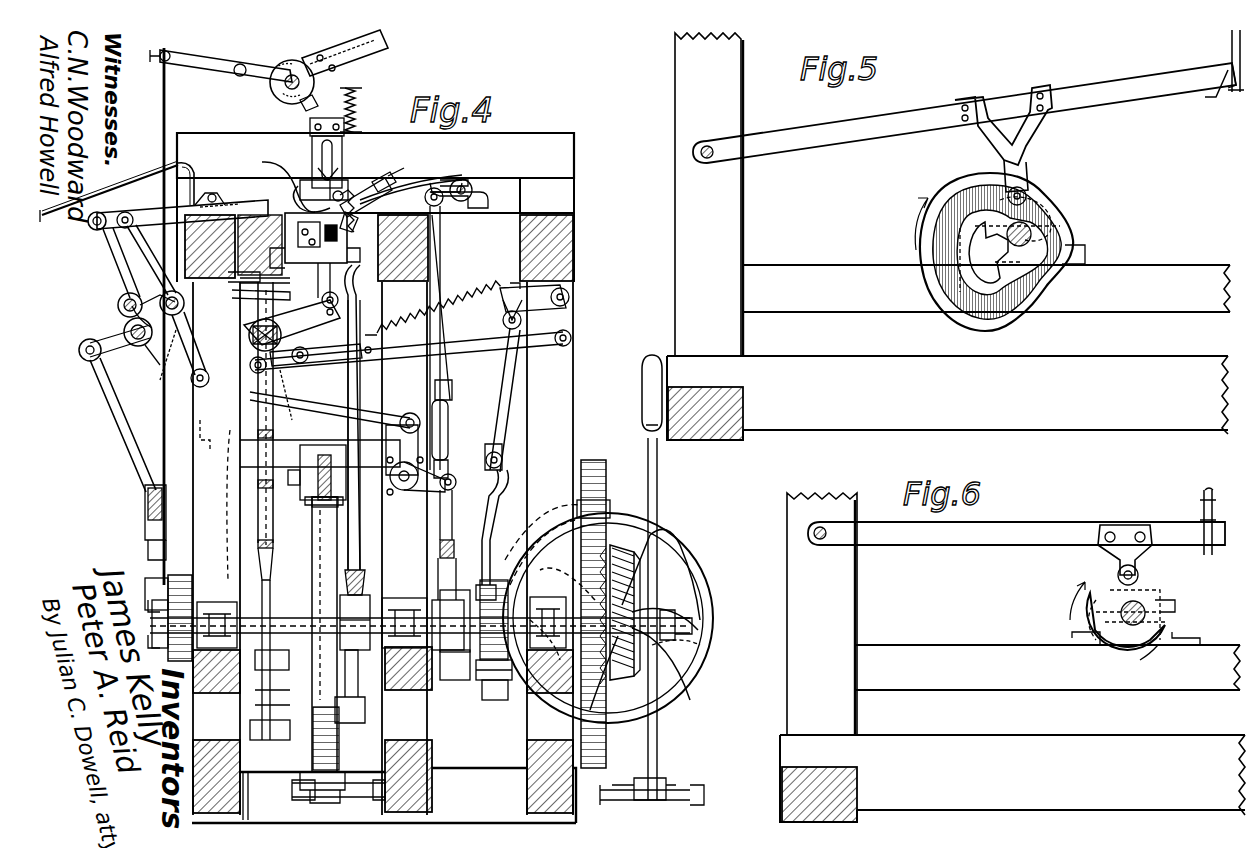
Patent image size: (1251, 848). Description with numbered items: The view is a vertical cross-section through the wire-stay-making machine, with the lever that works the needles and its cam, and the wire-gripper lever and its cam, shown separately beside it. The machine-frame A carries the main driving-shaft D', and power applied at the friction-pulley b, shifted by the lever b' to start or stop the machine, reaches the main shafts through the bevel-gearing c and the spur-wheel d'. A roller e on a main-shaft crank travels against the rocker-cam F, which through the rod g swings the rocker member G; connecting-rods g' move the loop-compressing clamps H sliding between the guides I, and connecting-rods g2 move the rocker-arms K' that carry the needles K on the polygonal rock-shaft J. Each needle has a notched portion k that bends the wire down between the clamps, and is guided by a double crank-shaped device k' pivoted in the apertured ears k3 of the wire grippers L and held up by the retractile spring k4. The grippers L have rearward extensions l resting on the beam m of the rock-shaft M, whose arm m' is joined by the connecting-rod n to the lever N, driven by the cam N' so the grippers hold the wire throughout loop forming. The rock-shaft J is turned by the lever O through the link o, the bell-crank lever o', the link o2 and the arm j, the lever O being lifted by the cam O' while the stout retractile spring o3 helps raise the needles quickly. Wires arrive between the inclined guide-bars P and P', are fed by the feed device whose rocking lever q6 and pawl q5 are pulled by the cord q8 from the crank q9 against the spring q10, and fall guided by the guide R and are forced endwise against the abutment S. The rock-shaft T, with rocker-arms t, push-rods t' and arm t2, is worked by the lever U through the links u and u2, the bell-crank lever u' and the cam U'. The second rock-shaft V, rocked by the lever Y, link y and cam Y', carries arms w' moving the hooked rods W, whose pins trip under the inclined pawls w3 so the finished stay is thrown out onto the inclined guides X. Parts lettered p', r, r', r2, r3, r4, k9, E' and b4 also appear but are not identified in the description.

In FIG. 4, the machine-frame A is at (574, 203).
In FIG. 5, the machine-frame A is at (735, 208).
In FIG. 6, the machine-frame A is at (855, 598).
In FIG. 4, the guides or ribs I is at (230, 225).
In FIG. 4, the cord or rope q8 is at (166, 118).
In FIG. 4, the rocking lever q6 is at (195, 62).
In FIG. 4, the spring-pressed pawl q5 is at (252, 60).
In FIG. 4, the upper inclined guide-bar P is at (292, 64).
In FIG. 4, the lower inclined guide-bar P' is at (354, 53).
In FIG. 4, the pin p' is at (308, 108).
In FIG. 4, the retractile spring q10 is at (357, 105).
In FIG. 4, the stationary upright plate or abutment S is at (310, 150).
In FIG. 4, the guide R is at (268, 170).
In FIG. 4, the wire grippers or fingers L is at (306, 190).
In FIG. 4, the overhanging notched portion k is at (299, 170).
In FIG. 4, the apertured ears k3 is at (321, 181).
In FIG. 4, the needles or loop-bending devices K is at (366, 182).
In FIG. 4, the retractile springs k4 is at (385, 175).
In FIG. 4, the double crank-shaped devices k' is at (357, 215).
In FIG. 4, the bar or beam m is at (411, 171).
In FIG. 4, the rearward extensions l is at (458, 176).
In FIG. 4, the rock-shaft M is at (472, 190).
In FIG. 4, the arm m' is at (453, 329).
In FIG. 4, the connecting-rod n is at (443, 262).
In FIG. 6, the connecting-rod n is at (1198, 505).
In FIG. 4, the stout retractile spring o3 is at (476, 300).
In FIG. 4, the link o is at (410, 355).
In FIG. 4, the intermediate bell-crank lever o' is at (552, 307).
In FIG. 4, the link o2 is at (508, 400).
In FIG. 5, the link o2 is at (1230, 40).
In FIG. 4, the lever O is at (495, 535).
In FIG. 5, the lever O is at (964, 106).
In FIG. 4, the link u is at (335, 403).
In FIG. 4, the intermediate bell-crank lever u' is at (421, 480).
In FIG. 4, the link u2 is at (440, 545).
In FIG. 4, the lever U is at (428, 604).
In FIG. 4, the inclined rods or guides X is at (107, 208).
In FIG. 4, the inclined pawls or dogs w3 is at (212, 190).
In FIG. 4, the rods W is at (178, 209).
In FIG. 4, the push-rods t' is at (190, 200).
In FIG. 4, the arms w' is at (111, 272).
In FIG. 4, the upstanding rocker-arms t is at (134, 270).
In FIG. 4, the roller r is at (126, 326).
In FIG. 4, the arm r4 is at (88, 340).
In FIG. 4, the second rock-shaft V is at (138, 345).
In FIG. 4, the rod or link y is at (112, 428).
In FIG. 4, the lever Y is at (134, 522).
In FIG. 4, the rock-shaft T is at (190, 312).
In FIG. 4, the pin r' is at (183, 310).
In FIG. 4, the arm t2 is at (172, 364).
In FIG. 4, the bar r2 is at (259, 272).
In FIG. 4, the loop-compressing clamps or jaws H is at (300, 248).
In FIG. 4, the bar r3 is at (261, 298).
In FIG. 4, the pin k9 is at (307, 286).
In FIG. 4, the rocker-arms K' is at (292, 325).
In FIG. 4, the rock-shaft J is at (316, 360).
In FIG. 4, the arm j is at (283, 392).
In FIG. 4, the connecting-rods g' is at (362, 417).
In FIG. 4, the connecting-rods g2 is at (274, 418).
In FIG. 4, the rocker members G is at (258, 492).
In FIG. 4, the rods g is at (313, 498).
In FIG. 4, the rocker-cams F is at (318, 554).
In FIG. 4, the main driving-shaft D' is at (274, 660).
In FIG. 4, the rollers e is at (312, 690).
In FIG. 4, the post E' is at (357, 511).
In FIG. 4, the cam Y' is at (183, 608).
In FIG. 4, the crank q9 is at (148, 618).
In FIG. 4, the spur-wheel d' is at (593, 596).
In FIG. 4, the bevel-gearing c is at (640, 580).
In FIG. 4, the friction-pulley b is at (608, 611).
In FIG. 4, the spoke b4 is at (676, 656).
In FIG. 4, the lever b' is at (652, 577).
In FIG. 4, the cam N' is at (452, 672).
In FIG. 6, the cam N' is at (1137, 605).
In FIG. 4, the cam U' is at (484, 680).
In FIG. 4, the cam O' is at (519, 686).
In FIG. 5, the cam O' is at (1012, 208).
In FIG. 6, the lever N is at (1016, 517).